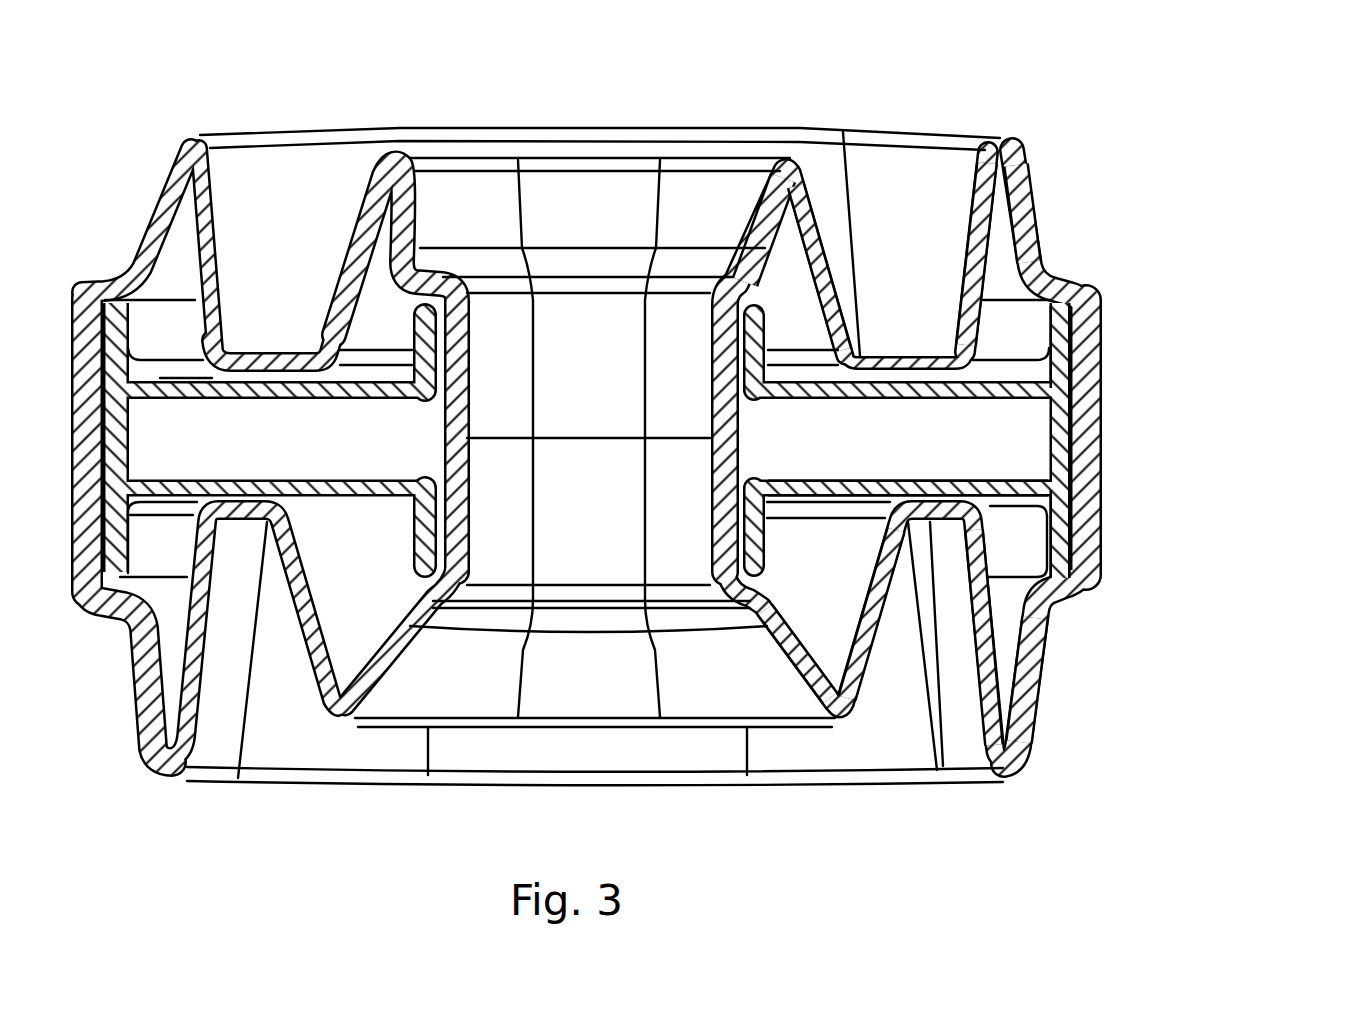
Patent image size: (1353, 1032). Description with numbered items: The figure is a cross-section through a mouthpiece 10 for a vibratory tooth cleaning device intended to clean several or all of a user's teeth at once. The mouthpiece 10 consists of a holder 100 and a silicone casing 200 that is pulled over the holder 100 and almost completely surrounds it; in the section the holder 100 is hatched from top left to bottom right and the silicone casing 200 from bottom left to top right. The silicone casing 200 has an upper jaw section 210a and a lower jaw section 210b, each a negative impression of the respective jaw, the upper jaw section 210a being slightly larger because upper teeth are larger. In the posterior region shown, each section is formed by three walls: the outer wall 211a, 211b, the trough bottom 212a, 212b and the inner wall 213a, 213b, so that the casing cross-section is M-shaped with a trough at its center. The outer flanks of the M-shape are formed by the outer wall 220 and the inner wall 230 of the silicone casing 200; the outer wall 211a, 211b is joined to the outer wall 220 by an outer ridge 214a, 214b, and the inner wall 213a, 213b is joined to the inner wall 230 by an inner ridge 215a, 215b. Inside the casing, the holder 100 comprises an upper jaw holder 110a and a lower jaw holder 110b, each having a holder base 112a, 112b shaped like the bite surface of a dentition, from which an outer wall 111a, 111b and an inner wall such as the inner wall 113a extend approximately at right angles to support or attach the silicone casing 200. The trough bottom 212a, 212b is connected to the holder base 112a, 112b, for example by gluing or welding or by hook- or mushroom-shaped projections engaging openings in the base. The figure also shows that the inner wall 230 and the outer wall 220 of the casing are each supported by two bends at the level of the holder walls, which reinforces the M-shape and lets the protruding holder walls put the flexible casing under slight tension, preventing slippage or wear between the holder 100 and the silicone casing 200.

The mouthpiece 10 is at (204, 82).
The holder 100 is at (1272, 352).
The upper jaw holder 110a is at (1198, 292).
The lower jaw holder 110b is at (1180, 480).
The outer wall of the upper jaw holder 111a is at (1060, 331).
The outer wall of the lower jaw holder 111b is at (1060, 522).
The holder base of the upper jaw holder 112a is at (917, 393).
The holder base of the lower jaw holder 112b is at (928, 497).
The inner wall of the upper jaw holder 113a is at (767, 332).
The silicone casing 200 is at (1055, 238).
The upper jaw section 210a is at (970, 68).
The lower jaw section 210b is at (1025, 840).
The outer wall of the upper jaw section 211a is at (957, 237).
The outer wall of the lower jaw section 211b is at (970, 650).
The trough bottom of the upper jaw section 212a is at (903, 352).
The trough bottom of the lower jaw section 212b is at (928, 525).
The inner wall of the upper jaw section 213a is at (818, 215).
The inner wall of the lower jaw section 213b is at (870, 672).
The outer ridge of the upper jaw section 214a is at (1003, 143).
The outer ridge of the lower jaw section 214b is at (1022, 778).
The inner ridge of the upper jaw section 215a is at (773, 157).
The inner ridge of the lower jaw section 215b is at (832, 733).
The outer wall of the silicone casing 220 is at (1105, 298).
The inner wall of the silicone casing 230 is at (700, 340).